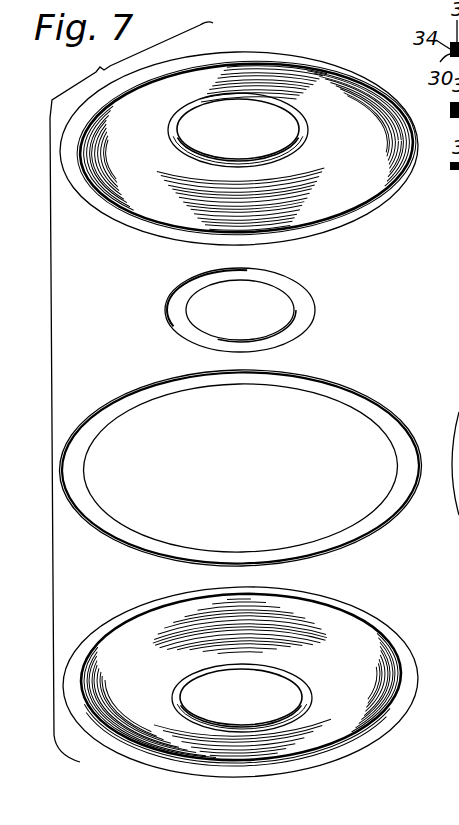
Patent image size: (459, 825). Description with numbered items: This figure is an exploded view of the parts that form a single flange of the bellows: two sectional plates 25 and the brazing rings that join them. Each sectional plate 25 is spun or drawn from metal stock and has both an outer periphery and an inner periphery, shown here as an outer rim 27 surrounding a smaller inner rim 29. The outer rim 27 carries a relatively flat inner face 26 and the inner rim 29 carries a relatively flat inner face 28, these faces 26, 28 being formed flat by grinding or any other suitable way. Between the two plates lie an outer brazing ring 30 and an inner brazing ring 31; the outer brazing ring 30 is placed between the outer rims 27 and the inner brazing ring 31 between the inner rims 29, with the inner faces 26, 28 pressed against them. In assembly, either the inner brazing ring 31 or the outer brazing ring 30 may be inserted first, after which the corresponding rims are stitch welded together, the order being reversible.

The sectional plate 25 is at (246, 414).
The inner face of outer rim 26 is at (377, 101).
The outer rim 27 is at (357, 76).
The inner face of inner rim 28 is at (276, 105).
The inner rim 29 is at (296, 135).
The outer brazing ring 30 is at (364, 408).
The inner brazing ring 31 is at (305, 305).